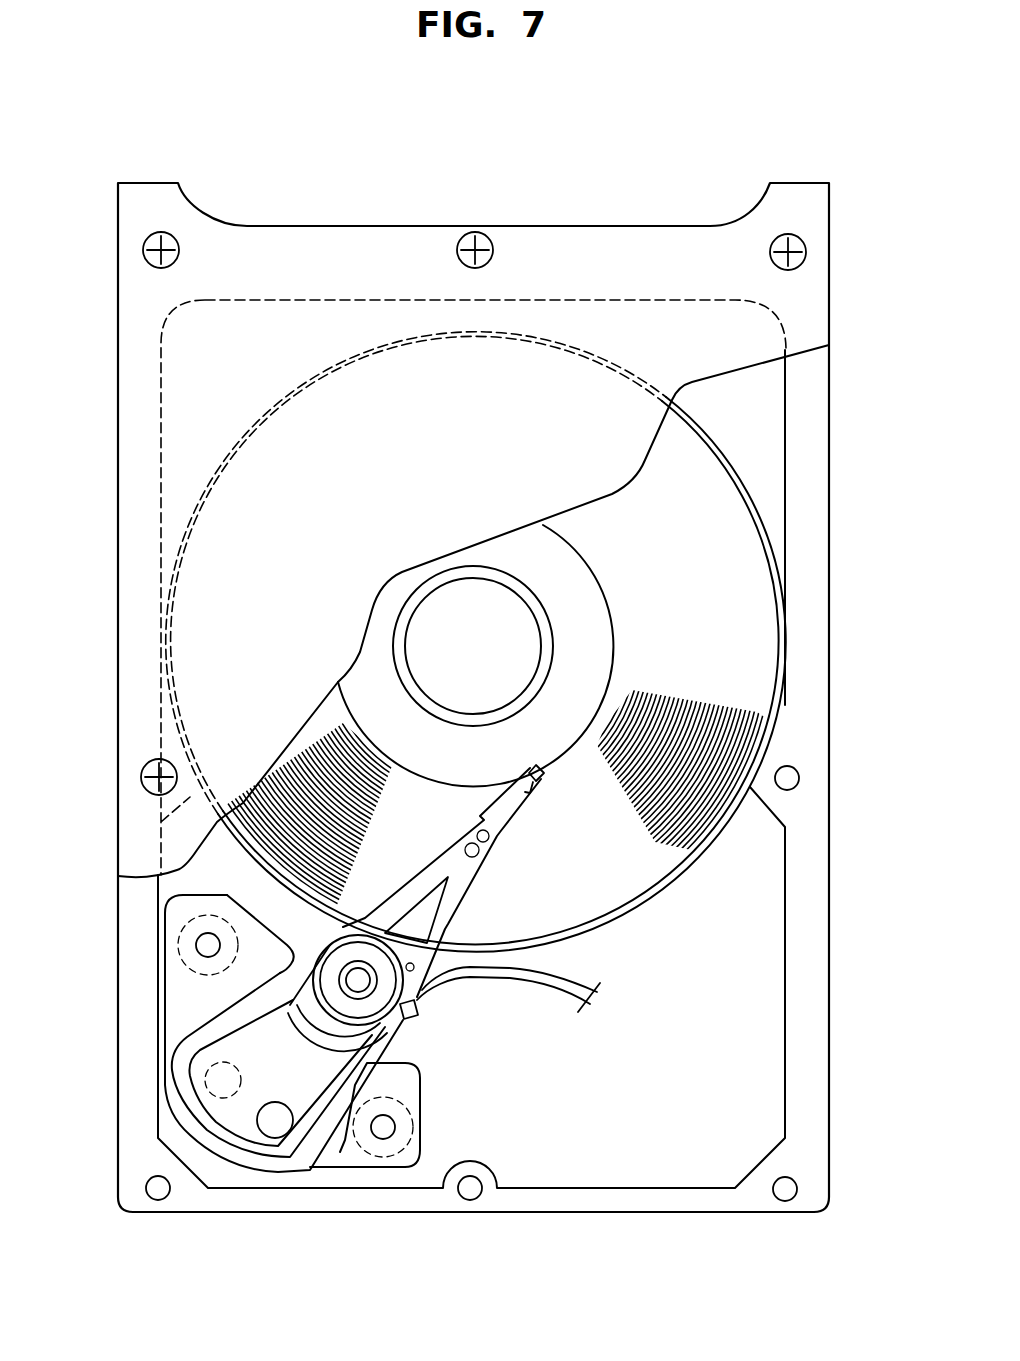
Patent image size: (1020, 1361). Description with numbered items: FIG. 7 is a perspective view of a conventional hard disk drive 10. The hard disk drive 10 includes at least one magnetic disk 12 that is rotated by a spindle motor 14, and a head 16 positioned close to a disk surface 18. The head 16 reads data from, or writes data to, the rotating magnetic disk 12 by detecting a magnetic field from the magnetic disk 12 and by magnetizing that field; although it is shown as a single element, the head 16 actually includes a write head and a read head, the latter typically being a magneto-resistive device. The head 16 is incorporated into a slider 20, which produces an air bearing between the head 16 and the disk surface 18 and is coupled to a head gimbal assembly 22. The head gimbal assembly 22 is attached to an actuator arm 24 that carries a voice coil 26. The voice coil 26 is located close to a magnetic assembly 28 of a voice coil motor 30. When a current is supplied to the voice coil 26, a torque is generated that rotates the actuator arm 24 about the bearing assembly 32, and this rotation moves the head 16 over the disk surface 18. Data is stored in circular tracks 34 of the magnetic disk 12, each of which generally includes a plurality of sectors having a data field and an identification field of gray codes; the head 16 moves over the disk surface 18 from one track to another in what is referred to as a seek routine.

The hard disk drive 10 is at (660, 161).
The magnetic disk 12 is at (740, 577).
The spindle motor 14 is at (447, 620).
The head 16 is at (545, 773).
The disk surface 18 is at (708, 646).
The slider 20 is at (528, 789).
The head gimbal assembly 22 is at (476, 883).
The actuator arm 24 is at (272, 993).
The voice coil 26 is at (193, 1071).
The magnetic assembly 28 is at (203, 1020).
The voice coil motor 30 is at (317, 1158).
The bearing assembly 32 is at (370, 993).
The circular tracks 34 is at (323, 768).